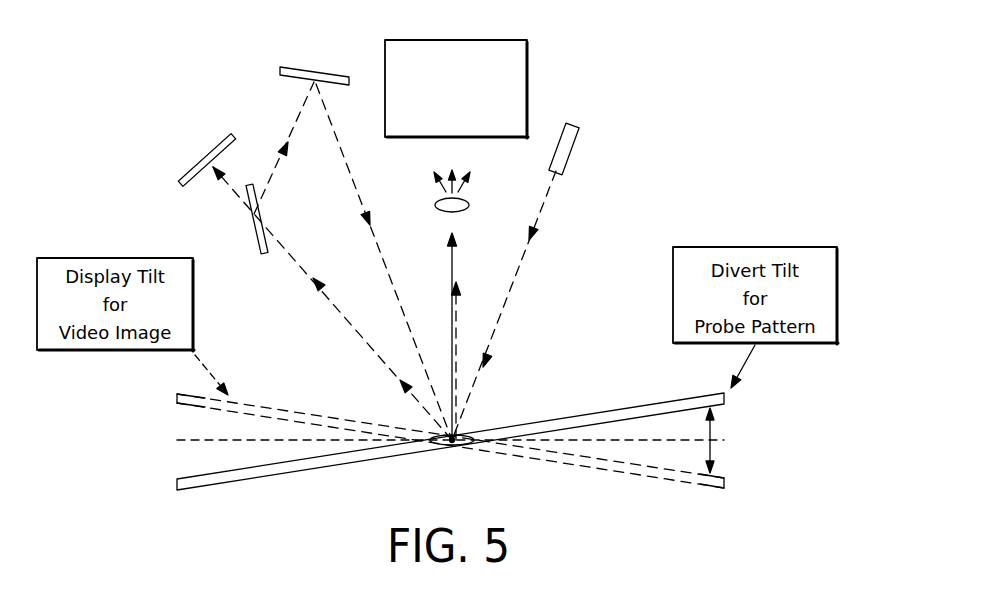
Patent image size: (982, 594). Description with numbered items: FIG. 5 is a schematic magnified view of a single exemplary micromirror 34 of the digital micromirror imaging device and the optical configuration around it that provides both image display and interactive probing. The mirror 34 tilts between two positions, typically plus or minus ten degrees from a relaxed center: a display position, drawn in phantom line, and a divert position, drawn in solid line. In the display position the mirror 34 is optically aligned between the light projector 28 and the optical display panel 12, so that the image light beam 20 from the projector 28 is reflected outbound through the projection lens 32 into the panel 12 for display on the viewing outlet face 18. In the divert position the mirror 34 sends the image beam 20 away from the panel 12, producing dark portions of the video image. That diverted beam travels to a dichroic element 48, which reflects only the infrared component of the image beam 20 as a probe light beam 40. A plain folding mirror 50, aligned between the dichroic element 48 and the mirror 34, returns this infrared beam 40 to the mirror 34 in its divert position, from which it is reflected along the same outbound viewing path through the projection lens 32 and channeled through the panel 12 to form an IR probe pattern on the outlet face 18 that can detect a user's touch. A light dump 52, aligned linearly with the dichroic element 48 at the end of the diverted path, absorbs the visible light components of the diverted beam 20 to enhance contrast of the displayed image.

The optical display panel 12 is at (527, 83).
The outlet face 18 is at (468, 122).
The image light beam 20 is at (456, 303).
The light projector 28 is at (572, 152).
The projection lens 32 is at (468, 196).
The micromirror 34 is at (605, 411).
The probe light beam 40 is at (450, 262).
The dichroic element 48 is at (258, 252).
The folding mirror 50 is at (305, 67).
The light dump 52 is at (205, 163).